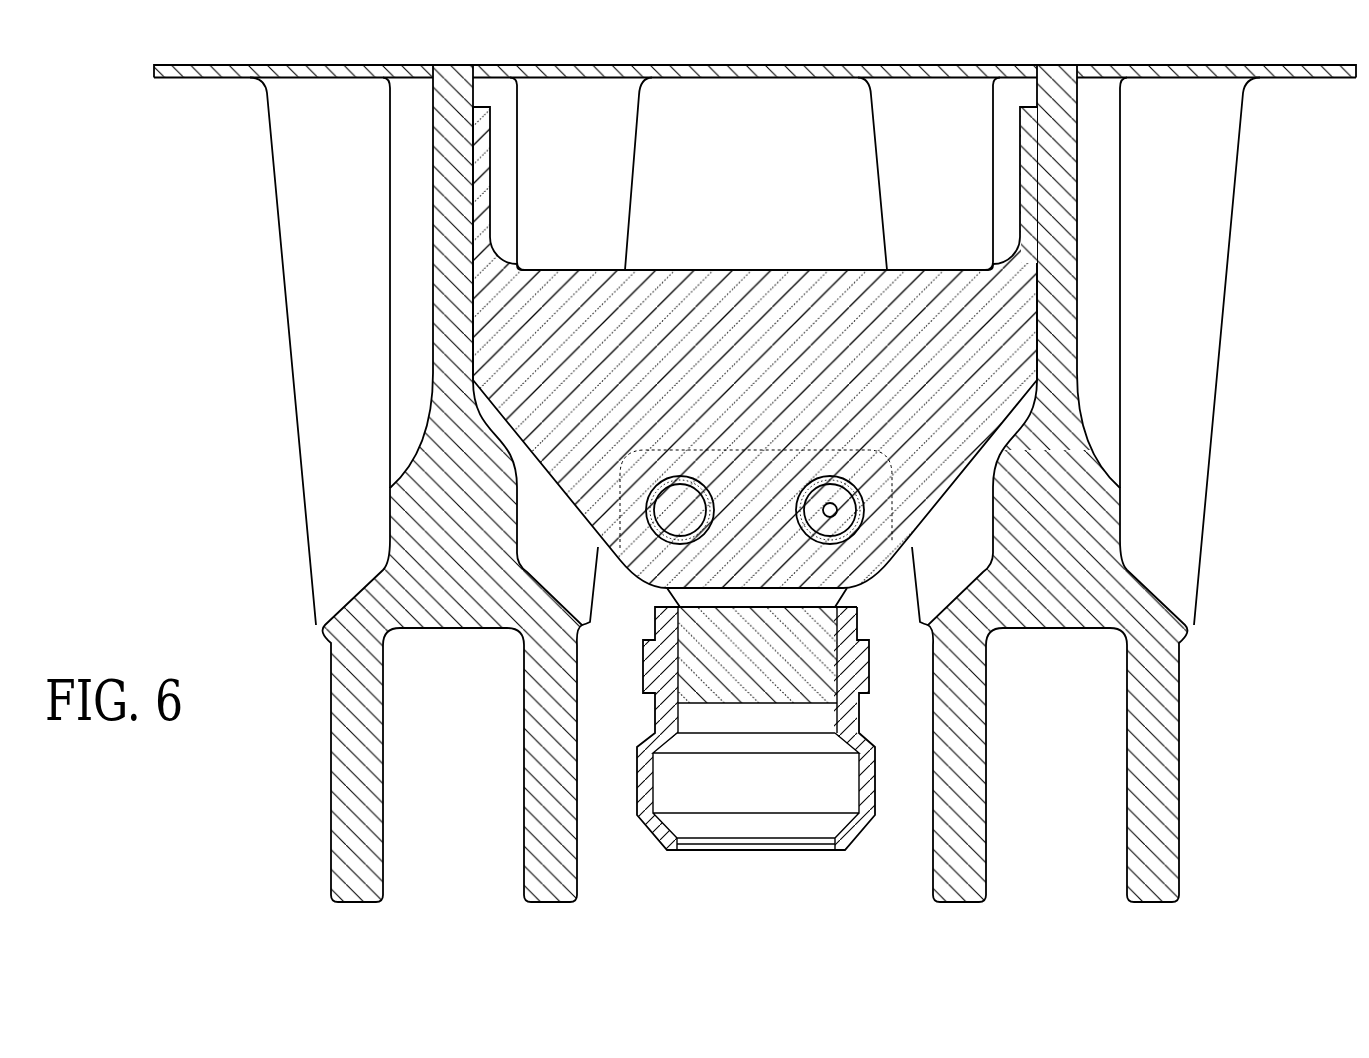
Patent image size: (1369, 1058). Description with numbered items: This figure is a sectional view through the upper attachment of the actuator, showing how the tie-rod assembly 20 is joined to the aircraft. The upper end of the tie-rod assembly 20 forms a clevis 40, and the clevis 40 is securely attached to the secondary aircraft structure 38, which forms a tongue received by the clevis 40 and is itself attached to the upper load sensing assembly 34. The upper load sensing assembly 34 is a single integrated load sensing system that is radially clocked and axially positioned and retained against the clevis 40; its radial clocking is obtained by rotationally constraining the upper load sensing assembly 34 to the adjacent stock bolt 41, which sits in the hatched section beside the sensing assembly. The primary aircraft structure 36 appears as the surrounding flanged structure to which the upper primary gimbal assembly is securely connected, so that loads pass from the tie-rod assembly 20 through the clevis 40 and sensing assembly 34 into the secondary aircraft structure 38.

The tie-rod assembly 20 is at (840, 851).
The upper load sensing assembly 34 is at (855, 515).
The primary aircraft structure 36 is at (389, 523).
The secondary aircraft structure 38 is at (777, 270).
The clevis 40 is at (847, 593).
The stock bolt 41 is at (661, 495).